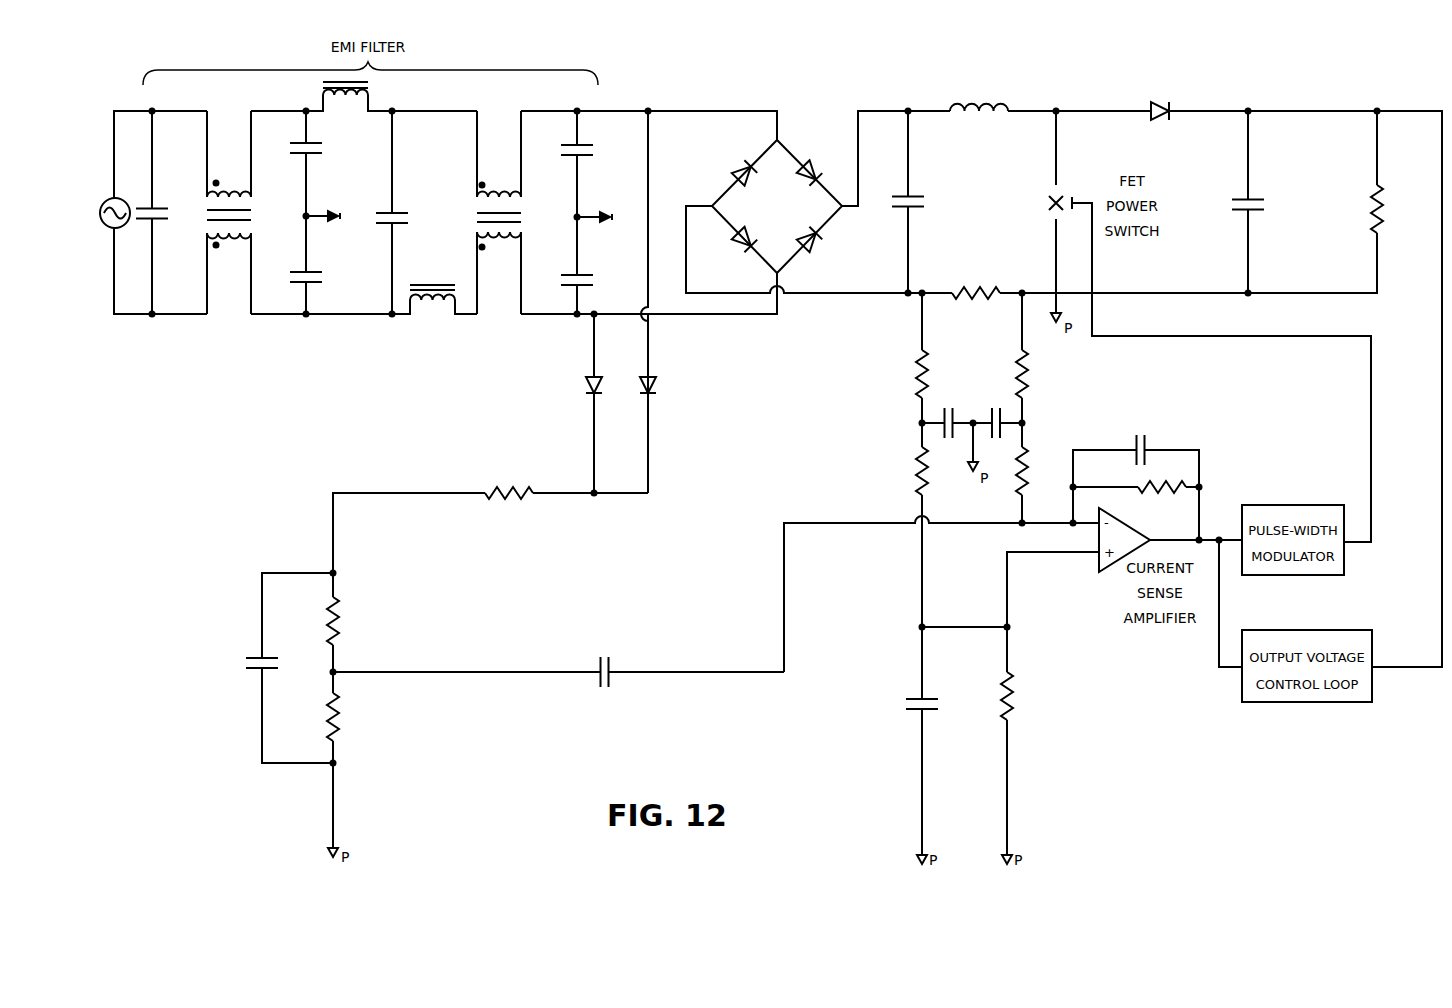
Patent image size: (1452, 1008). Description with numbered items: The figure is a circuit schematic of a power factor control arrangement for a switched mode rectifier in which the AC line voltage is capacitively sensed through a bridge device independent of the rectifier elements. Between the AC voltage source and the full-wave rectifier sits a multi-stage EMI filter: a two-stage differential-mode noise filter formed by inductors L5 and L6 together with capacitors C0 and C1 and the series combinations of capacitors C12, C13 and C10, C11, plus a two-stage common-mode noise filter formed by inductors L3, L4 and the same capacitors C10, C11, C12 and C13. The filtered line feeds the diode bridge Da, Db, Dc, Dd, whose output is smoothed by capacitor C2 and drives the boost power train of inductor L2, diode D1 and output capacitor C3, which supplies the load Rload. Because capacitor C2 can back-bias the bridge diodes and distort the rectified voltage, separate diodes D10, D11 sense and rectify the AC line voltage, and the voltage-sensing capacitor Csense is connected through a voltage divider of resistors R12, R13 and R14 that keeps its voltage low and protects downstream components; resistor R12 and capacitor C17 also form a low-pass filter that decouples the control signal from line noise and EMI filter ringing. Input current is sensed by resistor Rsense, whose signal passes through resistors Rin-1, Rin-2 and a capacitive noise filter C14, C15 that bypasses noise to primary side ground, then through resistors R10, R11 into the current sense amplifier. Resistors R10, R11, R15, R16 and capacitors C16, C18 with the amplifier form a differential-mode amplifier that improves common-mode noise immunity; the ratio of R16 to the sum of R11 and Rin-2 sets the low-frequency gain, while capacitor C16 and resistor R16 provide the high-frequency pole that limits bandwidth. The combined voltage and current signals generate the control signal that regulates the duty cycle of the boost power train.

The capacitor C0 is at (164, 212).
The inductor L4 is at (241, 212).
The inductor L5 is at (349, 96).
The capacitor C10 is at (321, 163).
The capacitor C11 is at (321, 265).
The capacitor C1 is at (399, 212).
The inductor L6 is at (391, 311).
The inductor L3 is at (512, 212).
The capacitor C12 is at (593, 164).
The capacitor C13 is at (593, 265).
The diode Da is at (738, 167).
The diode Db is at (817, 167).
The diode Dc is at (817, 245).
The diode Dd is at (738, 245).
The capacitor C2 is at (920, 202).
The inductor L2 is at (982, 93).
The diode D1 is at (1152, 100).
The capacitor C3 is at (1260, 202).
The load resistor Rload is at (1334, 202).
The current-sensing resistor Rsense is at (1078, 277).
The resistor Rin-1 is at (902, 358).
The resistor Rin-2 is at (1039, 358).
The capacitor C14 is at (947, 413).
The capacitor C15 is at (997, 413).
The resistor R10 is at (903, 525).
The resistor R11 is at (1038, 473).
The capacitor C16 is at (1136, 479).
The resistor R16 is at (1136, 499).
The diode D10 is at (579, 403).
The diode D11 is at (666, 403).
The resistor R12 is at (490, 519).
The resistor R13 is at (350, 622).
The resistor R14 is at (350, 717).
The capacitor C17 is at (273, 668).
The voltage-sensing capacitor Csense is at (558, 684).
The capacitor C18 is at (902, 741).
The resistor R15 is at (1024, 741).